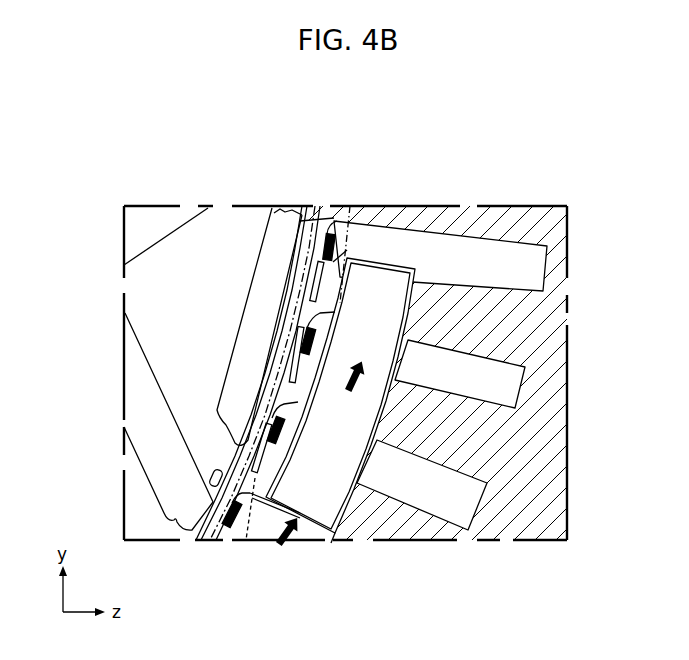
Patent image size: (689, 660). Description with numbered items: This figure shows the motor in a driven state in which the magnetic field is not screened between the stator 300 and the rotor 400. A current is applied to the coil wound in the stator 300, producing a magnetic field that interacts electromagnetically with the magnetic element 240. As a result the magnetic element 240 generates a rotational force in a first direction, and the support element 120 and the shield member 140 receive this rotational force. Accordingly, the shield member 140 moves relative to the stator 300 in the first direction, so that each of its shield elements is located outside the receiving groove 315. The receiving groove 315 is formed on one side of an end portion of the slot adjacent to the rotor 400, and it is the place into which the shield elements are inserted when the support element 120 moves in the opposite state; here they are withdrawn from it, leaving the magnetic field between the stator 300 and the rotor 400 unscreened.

The rotor 400 is at (243, 215).
The magnetic element 240 is at (368, 278).
The support element 120 is at (415, 303).
The shield member 140 is at (305, 334).
The receiving groove 315 is at (292, 373).
The stator 300 is at (548, 468).